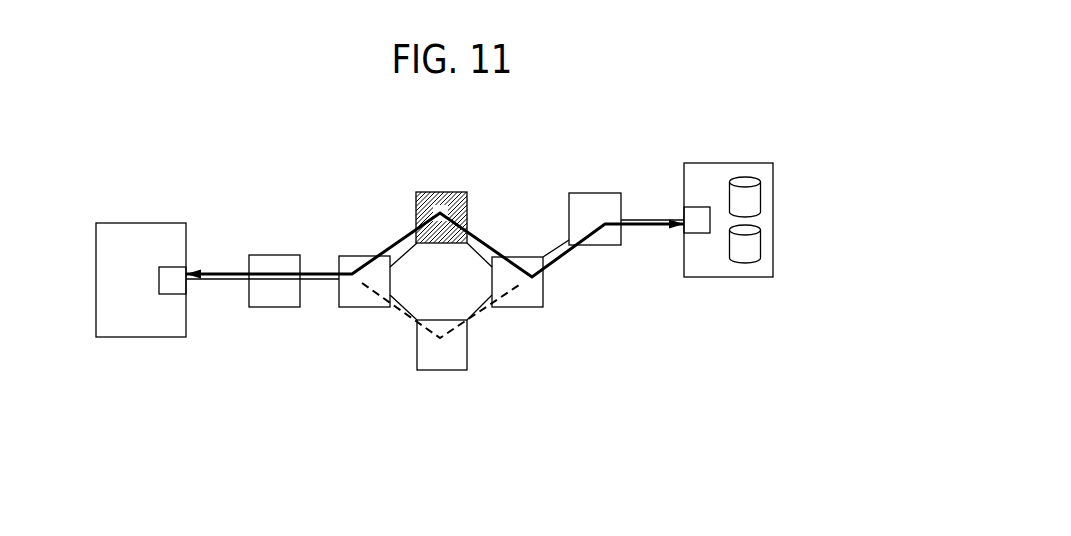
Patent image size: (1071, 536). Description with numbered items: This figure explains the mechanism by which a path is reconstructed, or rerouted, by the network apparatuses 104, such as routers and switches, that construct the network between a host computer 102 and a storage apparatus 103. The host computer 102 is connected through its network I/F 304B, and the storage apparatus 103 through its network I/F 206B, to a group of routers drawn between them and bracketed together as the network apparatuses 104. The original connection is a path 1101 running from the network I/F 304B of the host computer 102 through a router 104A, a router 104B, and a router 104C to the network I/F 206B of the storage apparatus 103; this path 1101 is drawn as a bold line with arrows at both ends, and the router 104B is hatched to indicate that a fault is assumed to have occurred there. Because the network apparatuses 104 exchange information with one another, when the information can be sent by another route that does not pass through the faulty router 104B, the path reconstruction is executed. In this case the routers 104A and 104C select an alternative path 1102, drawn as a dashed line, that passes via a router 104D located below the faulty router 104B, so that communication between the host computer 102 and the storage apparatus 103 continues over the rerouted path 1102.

The host computer 102 is at (142, 223).
The storage apparatus 103 is at (732, 163).
The network apparatuses 104 is at (647, 400).
The router 104A is at (362, 256).
The router 104B is at (440, 192).
The router 104C is at (520, 307).
The router 104D is at (447, 370).
The path 1101 is at (488, 243).
The path 1102 is at (394, 305).
The network I/F 206B is at (700, 233).
The network I/F 304B is at (172, 295).